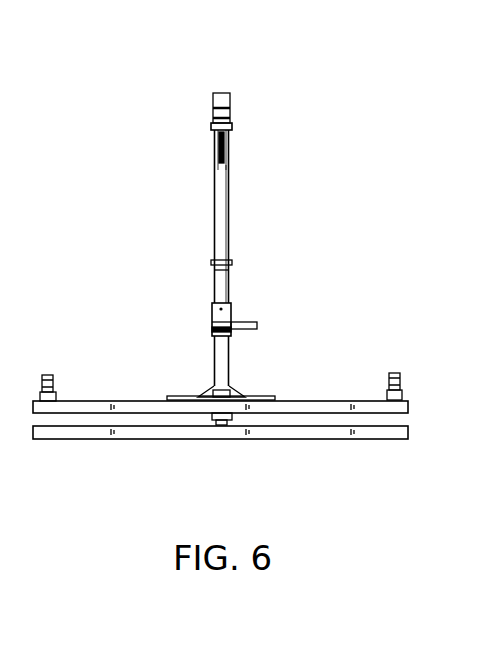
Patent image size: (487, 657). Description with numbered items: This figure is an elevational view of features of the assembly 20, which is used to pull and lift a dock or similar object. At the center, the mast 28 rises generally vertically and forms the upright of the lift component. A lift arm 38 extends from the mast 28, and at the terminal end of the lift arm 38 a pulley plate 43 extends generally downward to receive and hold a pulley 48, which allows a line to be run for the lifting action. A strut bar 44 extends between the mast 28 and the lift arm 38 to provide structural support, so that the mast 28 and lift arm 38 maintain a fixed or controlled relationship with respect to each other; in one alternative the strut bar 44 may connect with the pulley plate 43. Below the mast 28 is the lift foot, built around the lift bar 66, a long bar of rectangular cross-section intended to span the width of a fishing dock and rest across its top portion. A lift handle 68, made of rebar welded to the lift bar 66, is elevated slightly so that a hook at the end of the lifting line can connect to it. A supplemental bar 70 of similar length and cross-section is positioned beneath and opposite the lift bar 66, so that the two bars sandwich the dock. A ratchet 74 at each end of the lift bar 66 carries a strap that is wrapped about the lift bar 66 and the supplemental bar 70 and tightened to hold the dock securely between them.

The assembly 20 is at (373, 62).
The mast 28 is at (222, 358).
The lift arm 38 is at (223, 93).
The pulley plate 43 is at (232, 110).
The strut bar 44 is at (223, 229).
The pulley 48 is at (225, 157).
The lift bar 66 is at (410, 402).
The lift handle 68 is at (247, 395).
The supplemental bar 70 is at (408, 437).
The ratchet 74 is at (402, 383).